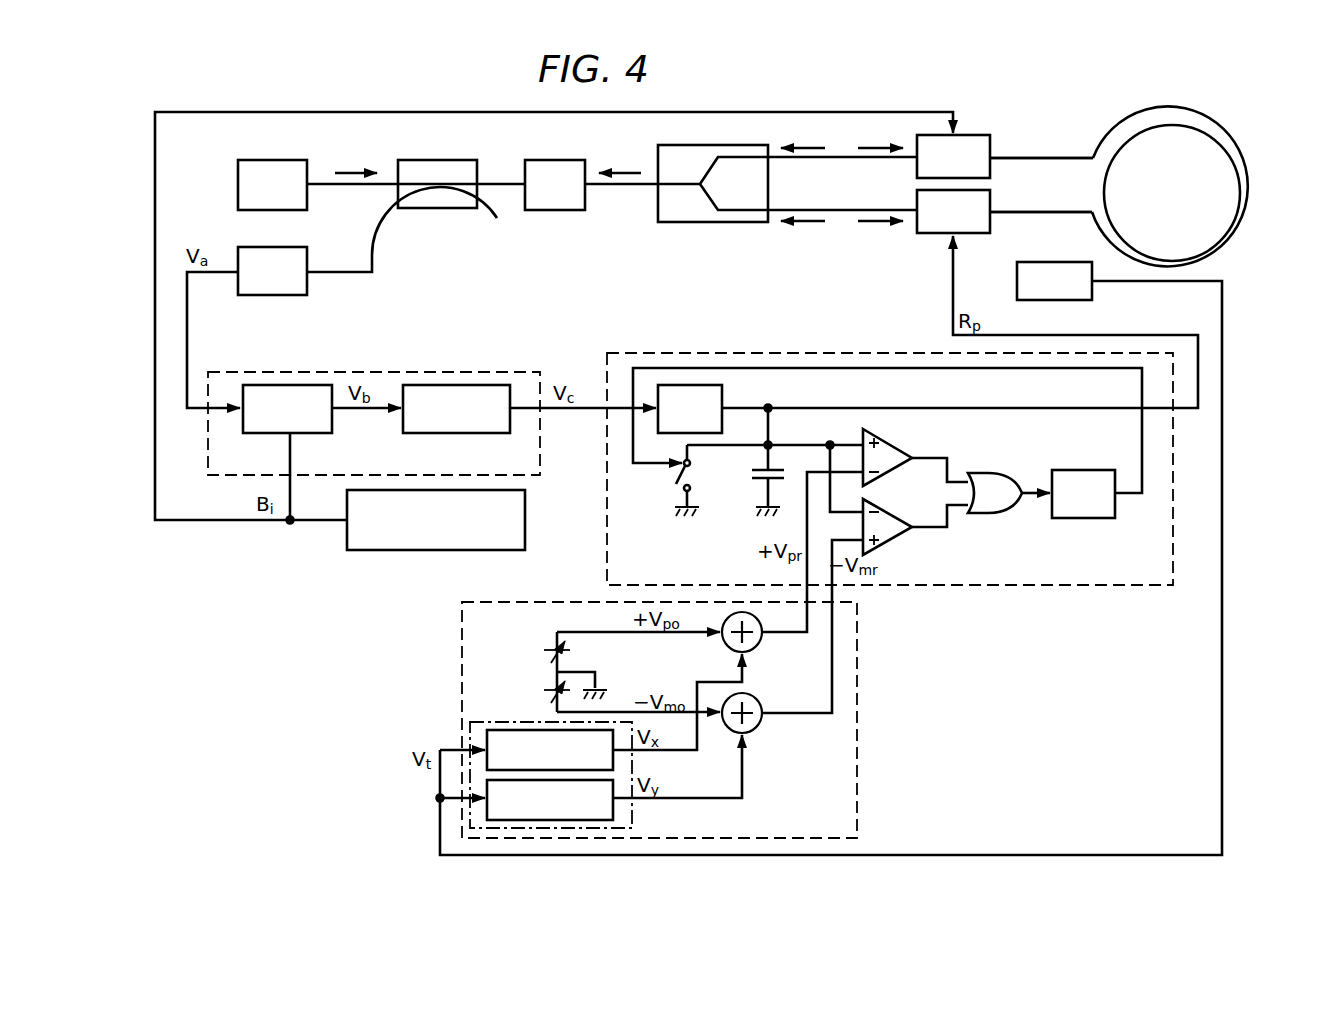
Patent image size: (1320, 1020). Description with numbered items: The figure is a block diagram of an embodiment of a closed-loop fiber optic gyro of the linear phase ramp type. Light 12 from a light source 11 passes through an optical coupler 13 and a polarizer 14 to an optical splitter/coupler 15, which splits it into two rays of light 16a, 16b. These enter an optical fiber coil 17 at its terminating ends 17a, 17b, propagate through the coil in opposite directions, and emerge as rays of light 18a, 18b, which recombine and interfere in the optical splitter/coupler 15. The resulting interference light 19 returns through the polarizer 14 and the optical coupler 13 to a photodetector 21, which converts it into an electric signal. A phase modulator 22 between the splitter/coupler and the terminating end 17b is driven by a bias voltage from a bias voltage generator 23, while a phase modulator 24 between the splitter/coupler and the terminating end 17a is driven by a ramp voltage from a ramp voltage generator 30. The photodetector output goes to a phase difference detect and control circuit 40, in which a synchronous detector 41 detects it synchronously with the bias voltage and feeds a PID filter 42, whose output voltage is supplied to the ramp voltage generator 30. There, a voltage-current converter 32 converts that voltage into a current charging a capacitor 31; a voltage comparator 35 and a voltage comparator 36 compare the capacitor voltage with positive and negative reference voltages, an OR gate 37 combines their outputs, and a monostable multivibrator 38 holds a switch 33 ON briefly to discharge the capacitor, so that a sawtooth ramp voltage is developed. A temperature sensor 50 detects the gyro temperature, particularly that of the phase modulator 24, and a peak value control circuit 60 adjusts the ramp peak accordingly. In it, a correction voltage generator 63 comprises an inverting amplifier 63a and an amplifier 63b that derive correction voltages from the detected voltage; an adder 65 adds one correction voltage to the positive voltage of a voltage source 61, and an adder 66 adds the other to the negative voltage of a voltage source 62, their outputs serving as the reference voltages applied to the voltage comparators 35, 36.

The light source 11 is at (256, 159).
The light 12 is at (349, 167).
The optical coupler 13 is at (434, 211).
The polarizer 14 is at (553, 212).
The optical splitter/coupler 15 is at (706, 224).
The light 16a is at (880, 224).
The light 16b is at (875, 146).
The optical fiber coil 17 is at (1242, 156).
The terminating end 17a is at (1037, 214).
The terminating end 17b is at (1034, 155).
The light 18a is at (810, 146).
The light 18b is at (813, 224).
The interference light 19 is at (619, 168).
The photodetector 21 is at (280, 297).
The phase modulator 22 is at (977, 134).
The bias voltage generator 23 is at (527, 520).
The phase modulator 24 is at (980, 236).
The ramp voltage generator 30 is at (730, 352).
The capacitor 31 is at (756, 478).
The voltage-current converter 32 is at (724, 394).
The switch 33 is at (677, 479).
The voltage comparator 35 is at (905, 441).
The voltage comparator 36 is at (900, 546).
The OR gate 37 is at (992, 471).
The monostable multivibrator 38 is at (1076, 468).
The phase difference detect and control circuit 40 is at (360, 370).
The synchronous detector 41 is at (314, 435).
The PID filter 42 is at (476, 435).
The temperature sensor 50 is at (1093, 296).
The peak value control circuit 60 is at (462, 678).
The voltage source 61 is at (540, 651).
The voltage source 62 is at (542, 691).
The correction voltage generator 63 is at (470, 736).
The inverting amplifier 63a is at (606, 729).
The amplifier 63b is at (615, 812).
The adder 65 is at (757, 647).
The adder 66 is at (757, 728).